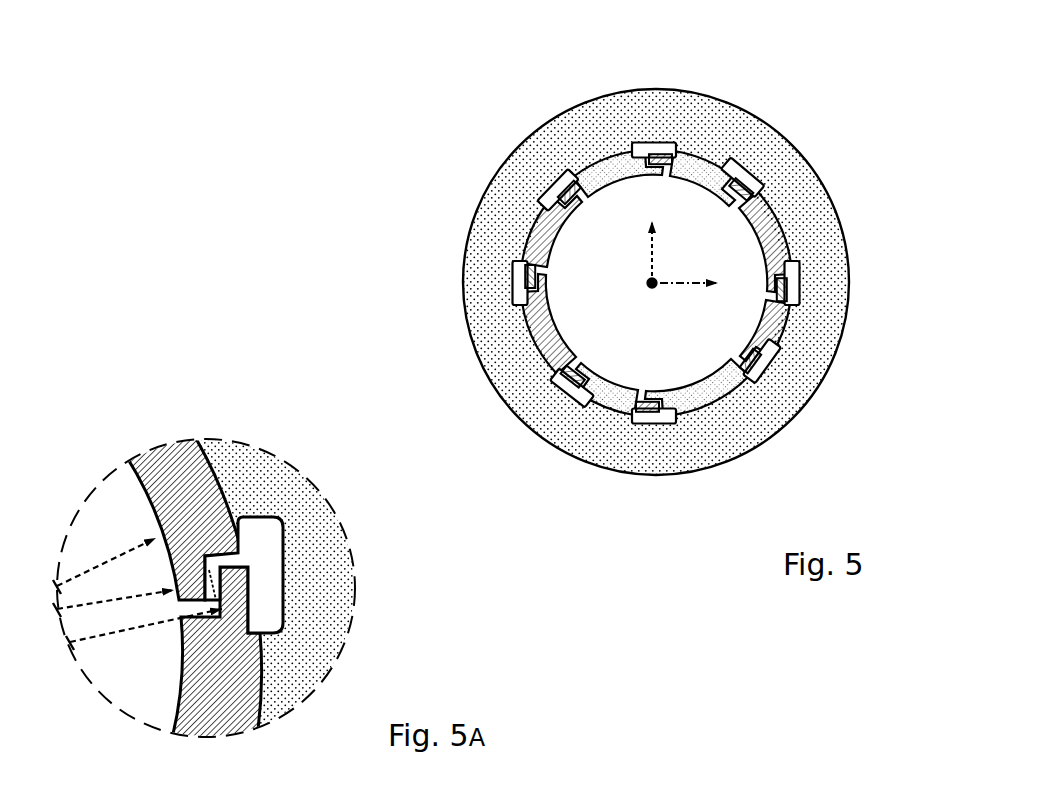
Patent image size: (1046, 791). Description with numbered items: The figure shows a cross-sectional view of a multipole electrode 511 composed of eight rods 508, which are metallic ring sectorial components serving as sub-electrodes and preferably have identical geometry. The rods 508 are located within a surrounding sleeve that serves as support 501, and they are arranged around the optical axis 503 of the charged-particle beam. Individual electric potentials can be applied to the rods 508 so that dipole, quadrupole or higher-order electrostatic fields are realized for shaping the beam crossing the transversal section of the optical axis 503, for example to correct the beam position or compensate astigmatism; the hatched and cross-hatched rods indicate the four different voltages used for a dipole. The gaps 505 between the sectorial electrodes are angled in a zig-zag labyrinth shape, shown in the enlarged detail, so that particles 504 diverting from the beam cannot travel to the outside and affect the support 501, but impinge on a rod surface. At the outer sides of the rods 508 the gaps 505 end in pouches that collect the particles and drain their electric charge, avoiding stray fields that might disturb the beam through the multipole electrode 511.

In FIG. 5, the support 501 is at (773, 120).
In FIG. 5A, the support 501 is at (330, 614).
In FIG. 5, the optical axis 503 is at (663, 258).
In FIG. 5A, the particles 504 is at (111, 548).
In FIG. 5, the gaps 505 is at (748, 178).
In FIG. 5A, the gaps 505 is at (255, 552).
In FIG. 5, the rods 508 is at (523, 340).
In FIG. 5A, the rods 508 is at (245, 690).
In FIG. 5, the multipole electrode 511 is at (785, 463).